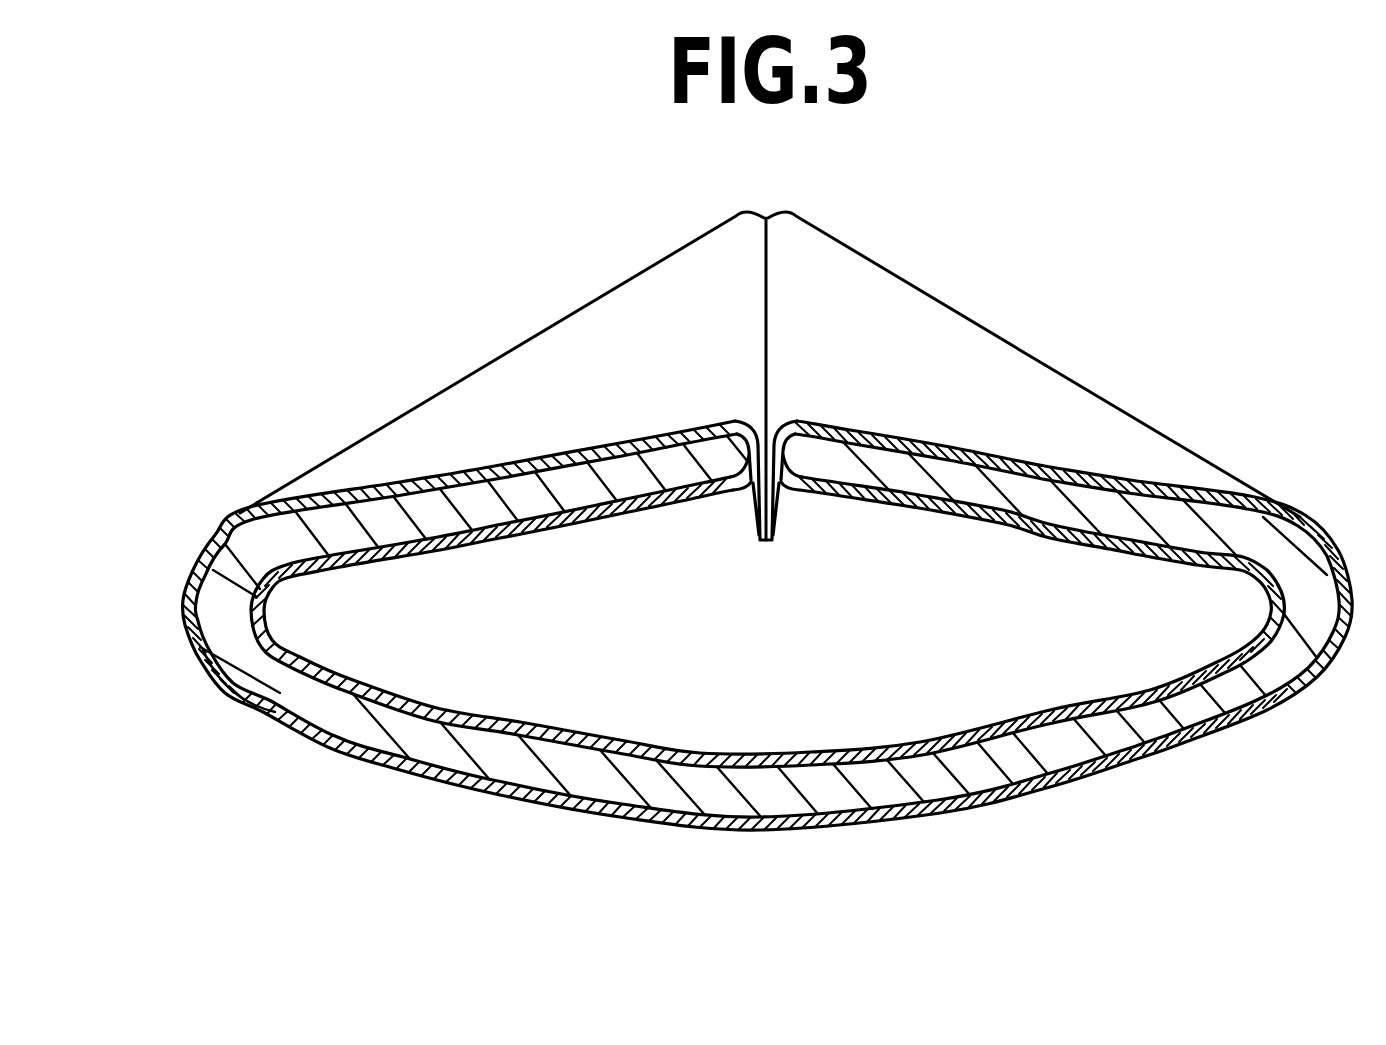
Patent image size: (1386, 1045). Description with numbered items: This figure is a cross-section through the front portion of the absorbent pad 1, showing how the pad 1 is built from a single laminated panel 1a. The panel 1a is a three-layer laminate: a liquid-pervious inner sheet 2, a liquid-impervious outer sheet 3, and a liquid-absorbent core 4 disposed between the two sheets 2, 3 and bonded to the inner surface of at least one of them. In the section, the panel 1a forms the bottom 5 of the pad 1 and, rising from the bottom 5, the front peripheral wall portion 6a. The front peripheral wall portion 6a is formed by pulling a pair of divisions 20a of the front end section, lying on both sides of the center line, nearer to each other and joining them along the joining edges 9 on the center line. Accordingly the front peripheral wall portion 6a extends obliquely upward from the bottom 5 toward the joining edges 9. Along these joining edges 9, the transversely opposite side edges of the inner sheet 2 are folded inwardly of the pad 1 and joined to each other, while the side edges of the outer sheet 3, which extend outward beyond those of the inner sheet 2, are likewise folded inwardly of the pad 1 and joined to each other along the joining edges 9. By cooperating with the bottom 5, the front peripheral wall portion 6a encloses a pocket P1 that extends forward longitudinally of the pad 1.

The absorbent pad 1 is at (767, 548).
The laminated panel 1a is at (768, 645).
The liquid-pervious inner sheet 2 is at (905, 750).
The liquid-impervious outer sheet 3 is at (672, 817).
The liquid-absorbent core 4 is at (820, 793).
The bottom 5 is at (618, 722).
The front peripheral wall portion 6a is at (1197, 467).
The joining edges 9 is at (767, 300).
The divisions of the front end section 20a is at (1077, 403).
The pocket P1 is at (933, 530).